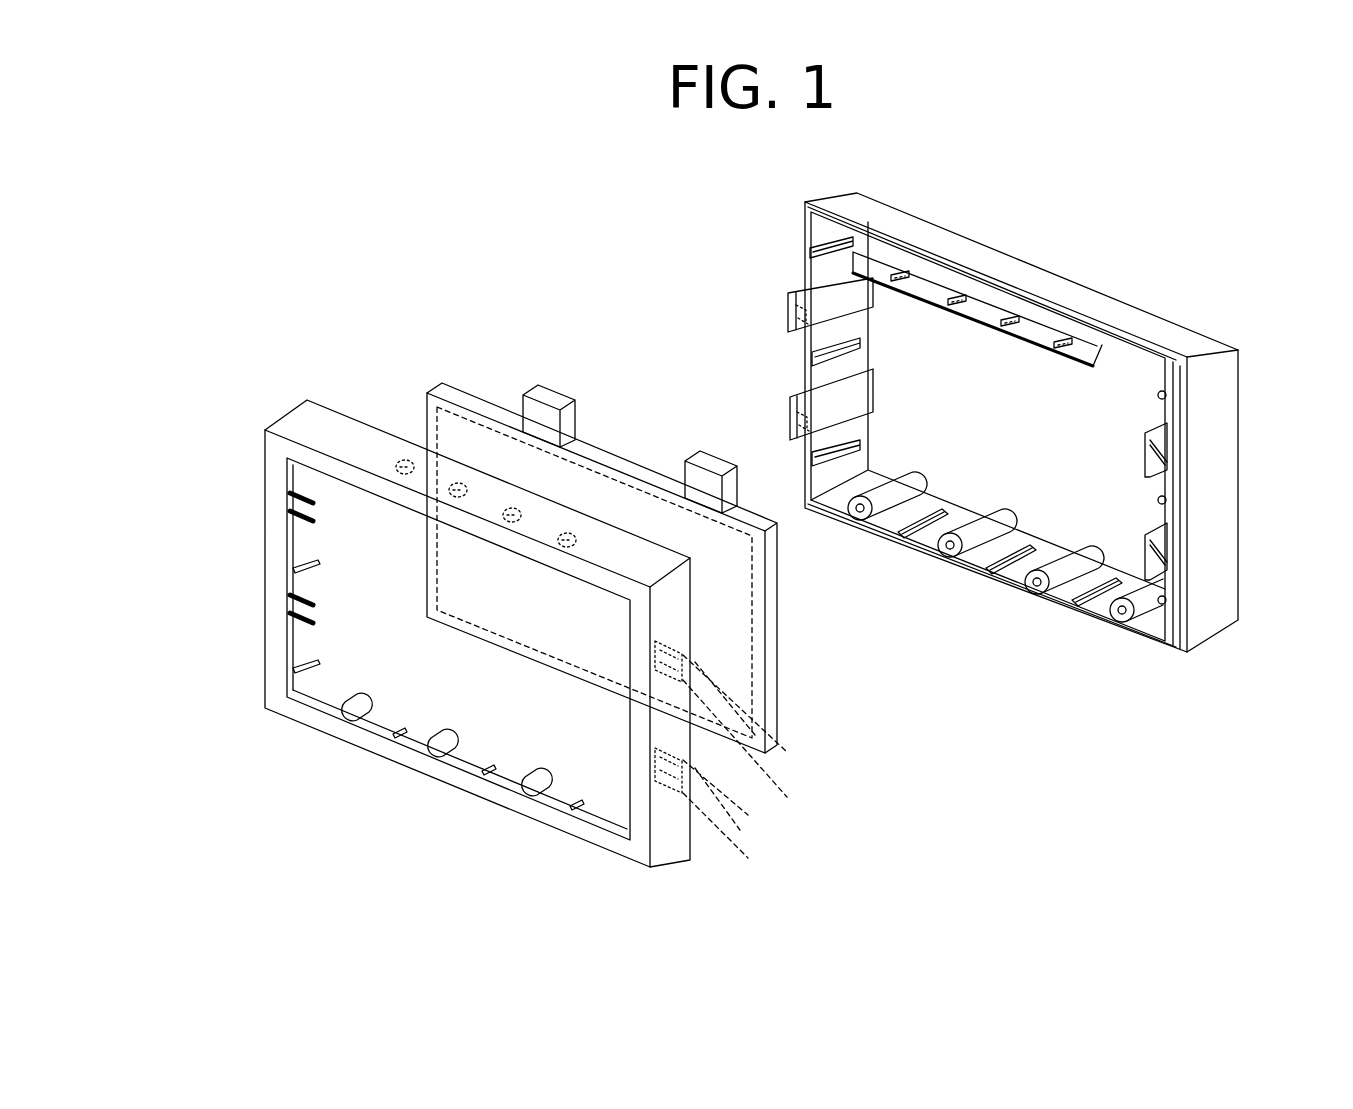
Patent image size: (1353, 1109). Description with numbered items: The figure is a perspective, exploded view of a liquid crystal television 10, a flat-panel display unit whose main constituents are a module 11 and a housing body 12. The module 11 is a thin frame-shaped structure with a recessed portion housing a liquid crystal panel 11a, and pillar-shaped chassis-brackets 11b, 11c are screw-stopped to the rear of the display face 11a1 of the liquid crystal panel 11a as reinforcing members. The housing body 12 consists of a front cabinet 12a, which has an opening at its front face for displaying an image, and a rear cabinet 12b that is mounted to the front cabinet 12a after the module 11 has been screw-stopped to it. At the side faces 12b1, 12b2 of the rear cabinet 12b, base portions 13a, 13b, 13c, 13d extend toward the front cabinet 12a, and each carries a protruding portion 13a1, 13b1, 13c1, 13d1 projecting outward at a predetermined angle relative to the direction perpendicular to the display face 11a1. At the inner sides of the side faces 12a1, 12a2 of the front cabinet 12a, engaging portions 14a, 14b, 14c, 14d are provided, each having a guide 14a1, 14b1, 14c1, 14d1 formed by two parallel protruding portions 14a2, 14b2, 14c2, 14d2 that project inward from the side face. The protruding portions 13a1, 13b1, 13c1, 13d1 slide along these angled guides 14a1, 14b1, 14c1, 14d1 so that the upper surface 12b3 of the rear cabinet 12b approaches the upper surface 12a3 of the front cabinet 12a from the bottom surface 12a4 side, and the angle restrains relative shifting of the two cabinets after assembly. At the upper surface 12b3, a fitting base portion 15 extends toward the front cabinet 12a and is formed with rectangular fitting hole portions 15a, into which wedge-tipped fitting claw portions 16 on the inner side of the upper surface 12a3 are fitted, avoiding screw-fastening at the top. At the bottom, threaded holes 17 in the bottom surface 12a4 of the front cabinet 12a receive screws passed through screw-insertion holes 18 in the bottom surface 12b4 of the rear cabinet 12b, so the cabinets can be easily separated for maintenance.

The liquid crystal television 10 is at (1053, 802).
The module 11 is at (778, 706).
The liquid crystal panel 11a is at (758, 662).
The display face 11a1 is at (736, 588).
The chassis-bracket 11b is at (560, 397).
The chassis-bracket 11c is at (692, 478).
The housing body 12 is at (375, 200).
The front cabinet 12a is at (325, 360).
The side face of front cabinet 12a1 is at (677, 862).
The side face of front cabinet 12a2 is at (298, 546).
The upper surface of front cabinet 12a3 is at (305, 415).
The bottom surface of front cabinet 12a4 is at (471, 757).
The rear cabinet 12b is at (778, 233).
The side face of rear cabinet 12b1 is at (1210, 630).
The side face of rear cabinet 12b2 is at (818, 373).
The upper surface of rear cabinet 12b3 is at (1097, 292).
The bottom surface of rear cabinet 12b4 is at (1153, 628).
The base portion 13a is at (1168, 424).
The protruding portion 13a1 is at (1162, 468).
The base portion 13b is at (1166, 522).
The protruding portion 13b1 is at (1166, 578).
The base portion 13c is at (790, 318).
The protruding portion 13c1 is at (787, 302).
The base portion 13d is at (790, 395).
The protruding portion 13d1 is at (787, 413).
The engaging portion 14a is at (636, 678).
The guide 14a1 is at (652, 643).
The protruding portions for guide 14a2 is at (782, 747).
The engaging portion 14b is at (648, 752).
The guide 14b1 is at (650, 757).
The protruding portions for guide 14b2 is at (744, 808).
The engaging portion 14c is at (318, 542).
The guide 14c1 is at (317, 524).
The protruding portions for guide 14c2 is at (293, 532).
The engaging portion 14d is at (322, 625).
The guide 14d1 is at (318, 632).
The protruding portions for guide 14d2 is at (297, 600).
The fitting base portion 15 is at (1105, 350).
The fitting hole portions 15a is at (1063, 337).
The fitting claw portions 16 is at (567, 531).
The threaded holes 17 is at (608, 812).
The screw-insertion holes 18 is at (1135, 606).